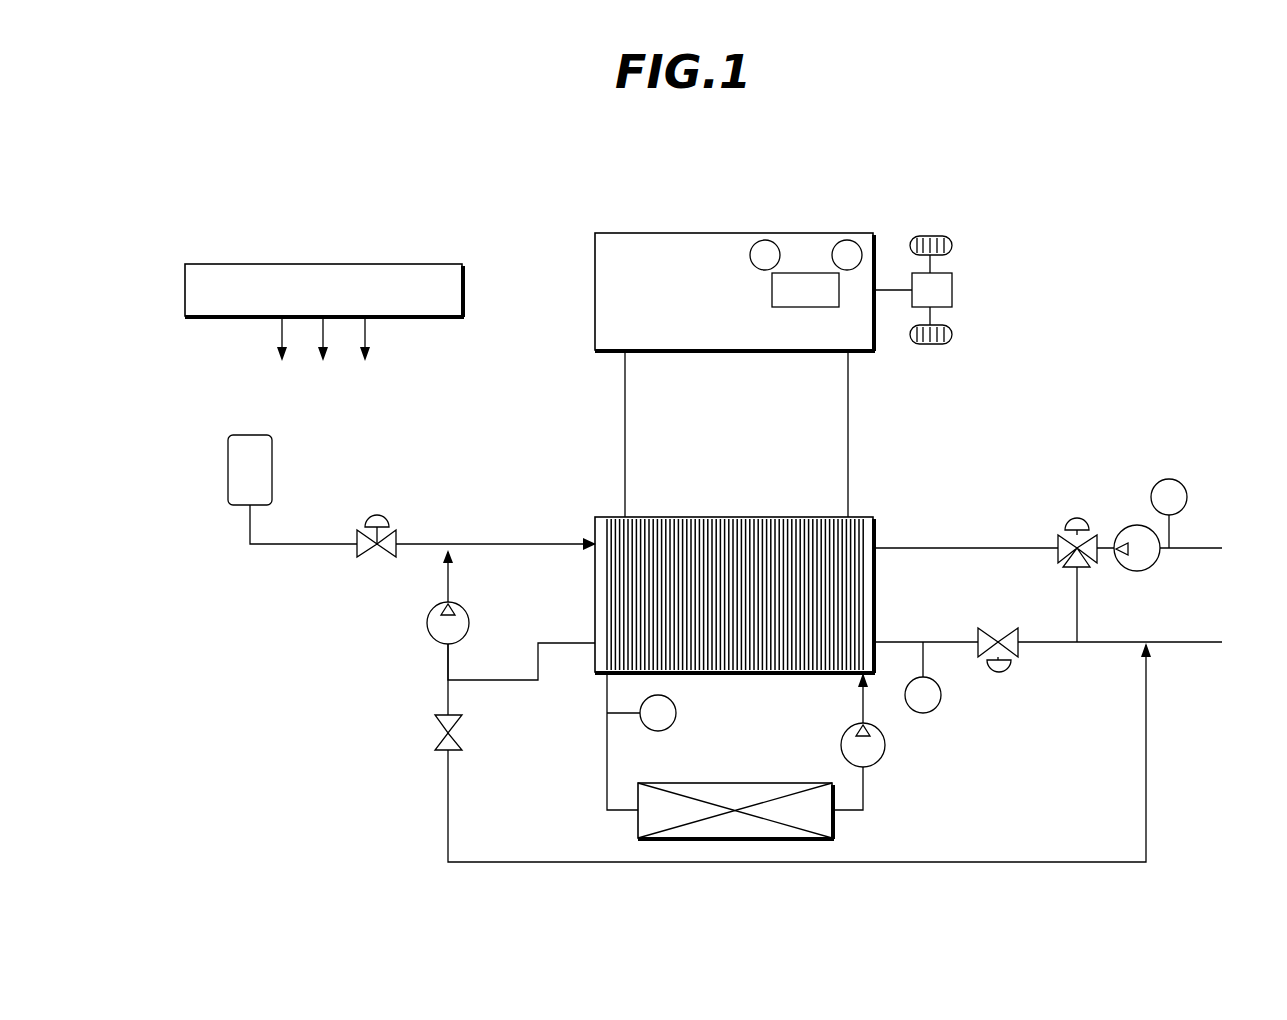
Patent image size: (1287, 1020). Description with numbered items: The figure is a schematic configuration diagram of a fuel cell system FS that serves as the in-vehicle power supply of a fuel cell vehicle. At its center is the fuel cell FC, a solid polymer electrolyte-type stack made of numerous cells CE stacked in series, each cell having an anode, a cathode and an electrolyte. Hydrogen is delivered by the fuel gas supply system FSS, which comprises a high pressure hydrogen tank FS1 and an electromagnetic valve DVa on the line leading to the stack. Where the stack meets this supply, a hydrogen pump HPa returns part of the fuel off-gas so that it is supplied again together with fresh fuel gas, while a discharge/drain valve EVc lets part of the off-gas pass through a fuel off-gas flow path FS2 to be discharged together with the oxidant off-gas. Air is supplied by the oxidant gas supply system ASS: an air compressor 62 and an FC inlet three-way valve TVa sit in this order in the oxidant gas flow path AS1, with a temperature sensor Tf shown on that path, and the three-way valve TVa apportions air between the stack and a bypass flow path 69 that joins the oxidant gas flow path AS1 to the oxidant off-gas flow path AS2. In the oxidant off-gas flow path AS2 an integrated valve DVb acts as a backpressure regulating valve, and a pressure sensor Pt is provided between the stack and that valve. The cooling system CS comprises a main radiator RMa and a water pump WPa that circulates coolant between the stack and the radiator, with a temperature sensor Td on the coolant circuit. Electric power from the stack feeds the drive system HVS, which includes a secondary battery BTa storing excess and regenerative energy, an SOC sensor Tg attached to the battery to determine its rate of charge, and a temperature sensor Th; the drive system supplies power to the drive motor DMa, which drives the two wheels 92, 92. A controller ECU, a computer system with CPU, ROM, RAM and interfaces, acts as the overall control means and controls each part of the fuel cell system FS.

The controller ECU is at (357, 263).
The drive system HVS is at (658, 232).
The temperature sensor Th is at (768, 240).
The secondary battery BTa is at (802, 272).
The SOC sensor Tg is at (853, 238).
The drive motor DMa is at (947, 292).
The wheel 92 is at (952, 245).
The fuel cell system FS is at (1147, 274).
The high pressure hydrogen tank FS1 is at (227, 470).
The electromagnetic valve DVa is at (383, 548).
The hydrogen pump HPa is at (463, 612).
The fuel gas supply system FSS is at (320, 648).
The discharge/drain valve EVc is at (445, 735).
The fuel off-gas flow path FS2 is at (447, 820).
The cell CE is at (713, 527).
The fuel cell FC is at (735, 616).
The temperature sensor Td is at (675, 728).
The water pump WPa is at (842, 747).
The cooling system CS is at (906, 764).
The main radiator RMa is at (832, 820).
The pressure sensor Pt is at (940, 703).
The integrated valve DVb is at (998, 638).
The FC inlet three-way valve TVa is at (1067, 520).
The temperature sensor Tf is at (1175, 478).
The oxidant gas flow path AS1 is at (1187, 547).
The air compressor 62 is at (1155, 562).
The bypass flow path 69 is at (1078, 598).
The oxidant gas supply system ASS is at (1075, 654).
The oxidant off-gas flow path AS2 is at (1192, 643).